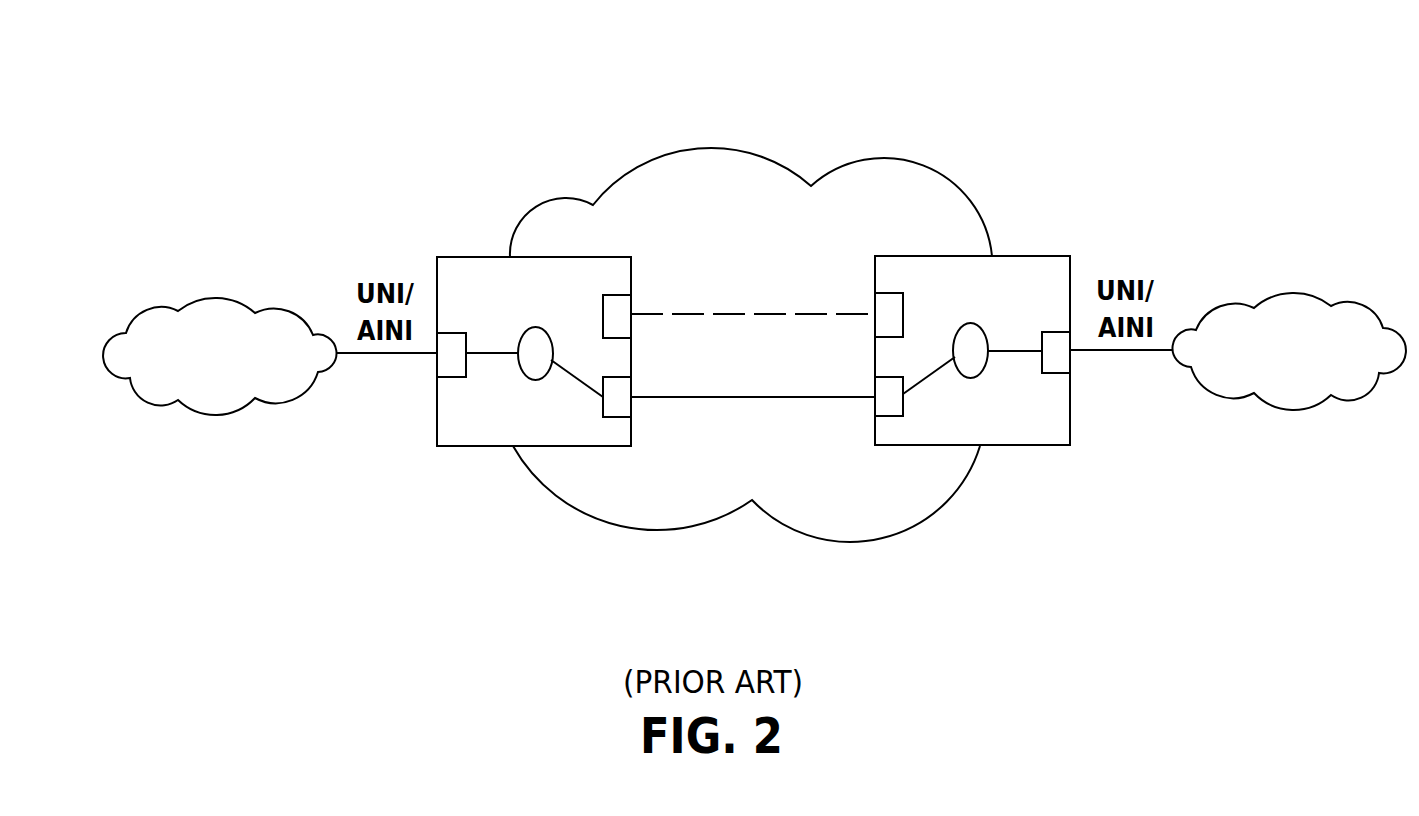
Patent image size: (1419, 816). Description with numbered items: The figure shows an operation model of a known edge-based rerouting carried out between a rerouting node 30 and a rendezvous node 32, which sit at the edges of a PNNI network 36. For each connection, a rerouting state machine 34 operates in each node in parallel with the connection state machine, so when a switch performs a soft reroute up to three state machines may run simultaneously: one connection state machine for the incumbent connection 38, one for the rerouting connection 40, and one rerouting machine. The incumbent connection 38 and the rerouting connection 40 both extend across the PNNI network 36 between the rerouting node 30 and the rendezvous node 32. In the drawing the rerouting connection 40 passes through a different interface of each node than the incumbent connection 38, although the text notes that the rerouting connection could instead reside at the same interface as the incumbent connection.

The rerouting node 30 is at (477, 446).
The rendezvous node 32 is at (1017, 446).
The rerouting state machine 34 is at (524, 333).
The PNNI network 36 is at (745, 312).
The incumbent connection 38 is at (687, 397).
The rerouting connection 40 is at (657, 188).